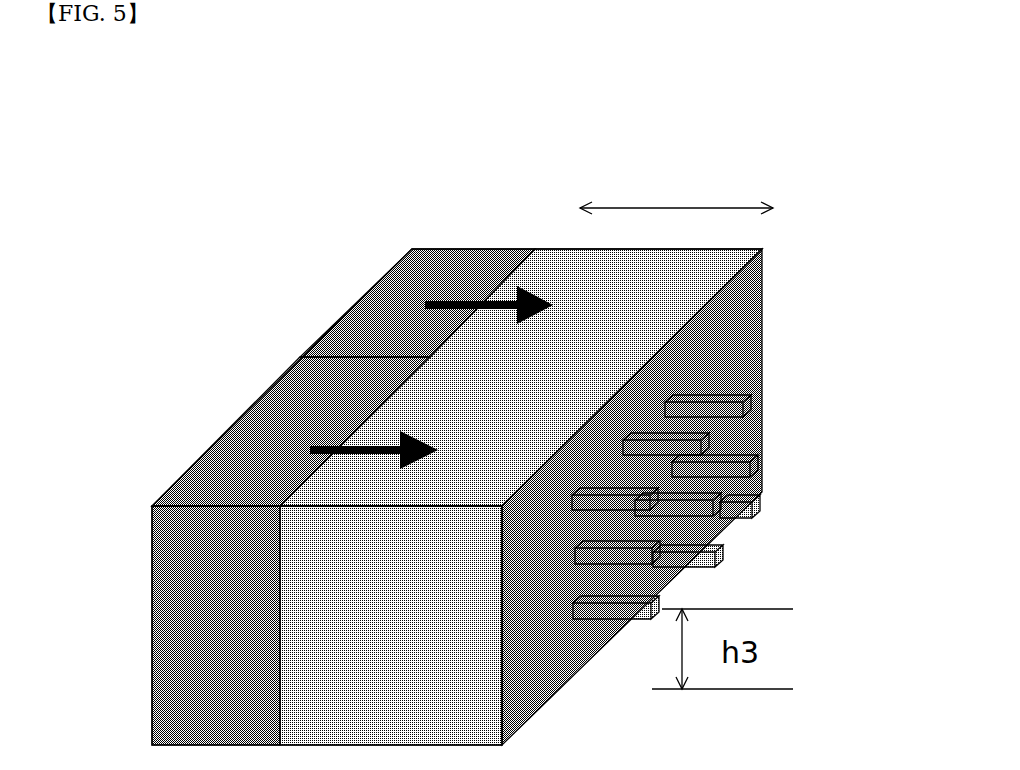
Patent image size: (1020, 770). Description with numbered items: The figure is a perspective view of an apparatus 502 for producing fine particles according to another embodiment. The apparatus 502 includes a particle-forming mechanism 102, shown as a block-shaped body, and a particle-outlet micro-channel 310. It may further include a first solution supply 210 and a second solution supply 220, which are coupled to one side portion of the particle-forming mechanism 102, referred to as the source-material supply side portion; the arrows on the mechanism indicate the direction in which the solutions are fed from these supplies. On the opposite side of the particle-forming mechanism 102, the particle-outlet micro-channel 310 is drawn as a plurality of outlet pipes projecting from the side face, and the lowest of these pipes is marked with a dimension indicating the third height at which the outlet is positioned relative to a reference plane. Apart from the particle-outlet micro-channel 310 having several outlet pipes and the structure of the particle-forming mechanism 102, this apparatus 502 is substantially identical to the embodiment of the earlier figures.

The apparatus for producing fine particles 502 is at (739, 158).
The particle-forming mechanism 102 is at (676, 191).
The first solution supply 210 is at (360, 335).
The second solution supply 220 is at (277, 427).
The particle-outlet micro-channel 310 is at (772, 425).